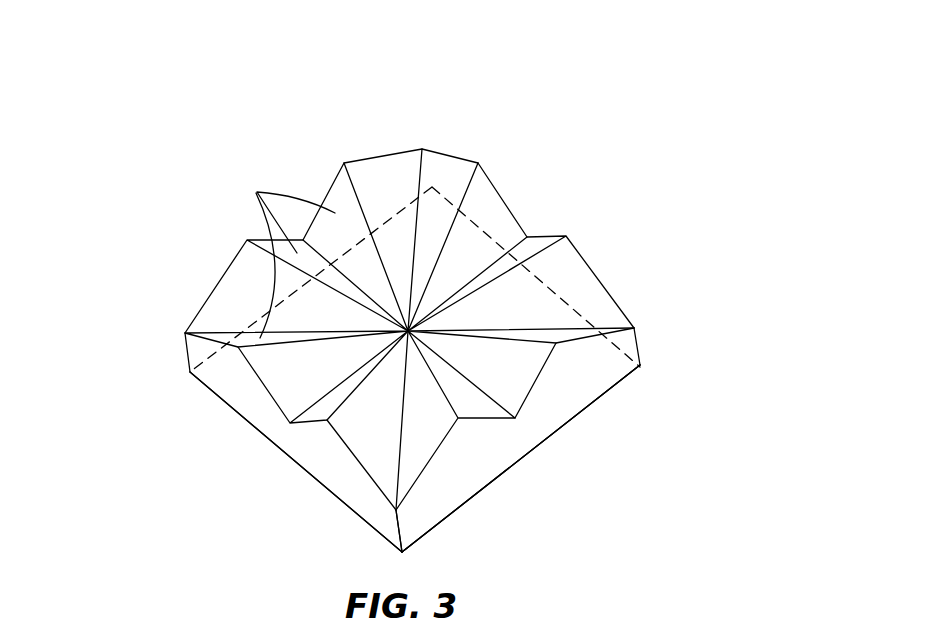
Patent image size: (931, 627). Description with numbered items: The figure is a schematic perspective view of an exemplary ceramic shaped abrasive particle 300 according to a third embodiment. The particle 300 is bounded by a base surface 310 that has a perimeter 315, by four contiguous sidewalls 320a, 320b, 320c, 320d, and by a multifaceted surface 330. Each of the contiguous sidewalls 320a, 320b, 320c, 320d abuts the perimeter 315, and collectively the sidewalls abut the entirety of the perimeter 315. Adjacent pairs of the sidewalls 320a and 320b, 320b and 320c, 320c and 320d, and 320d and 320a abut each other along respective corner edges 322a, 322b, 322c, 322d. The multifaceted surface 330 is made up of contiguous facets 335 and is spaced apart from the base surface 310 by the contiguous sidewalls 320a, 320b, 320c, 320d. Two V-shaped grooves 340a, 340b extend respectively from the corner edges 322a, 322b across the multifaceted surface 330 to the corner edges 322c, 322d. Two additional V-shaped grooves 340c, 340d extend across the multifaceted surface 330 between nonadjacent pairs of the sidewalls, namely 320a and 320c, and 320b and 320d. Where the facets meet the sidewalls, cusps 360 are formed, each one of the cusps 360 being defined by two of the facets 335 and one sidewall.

The ceramic shaped abrasive particle 300 is at (233, 123).
The base surface 310 is at (565, 426).
The perimeter 315 is at (288, 457).
The contiguous sidewall 320a is at (585, 262).
The contiguous sidewall 320b is at (215, 277).
The contiguous sidewall 320c is at (350, 483).
The contiguous sidewall 320d is at (582, 380).
The corner edge 322a is at (432, 187).
The corner edge 322b is at (183, 355).
The corner edge 322c is at (397, 533).
The corner edge 322d is at (638, 343).
The multifaceted surface 330 is at (383, 183).
The contiguous facets 335 is at (274, 256).
The V-shaped groove 340a is at (416, 216).
The V-shaped groove 340b is at (217, 332).
The V-shaped groove 340c is at (318, 405).
The V-shaped groove 340d is at (488, 397).
The cusps 360 is at (397, 512).